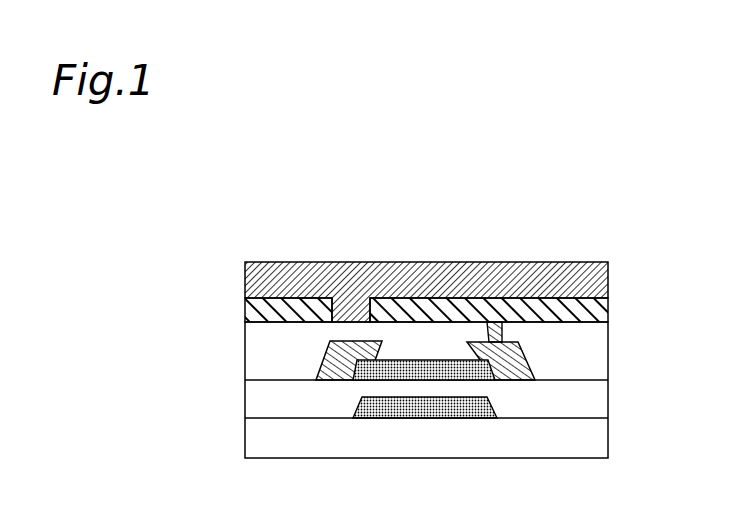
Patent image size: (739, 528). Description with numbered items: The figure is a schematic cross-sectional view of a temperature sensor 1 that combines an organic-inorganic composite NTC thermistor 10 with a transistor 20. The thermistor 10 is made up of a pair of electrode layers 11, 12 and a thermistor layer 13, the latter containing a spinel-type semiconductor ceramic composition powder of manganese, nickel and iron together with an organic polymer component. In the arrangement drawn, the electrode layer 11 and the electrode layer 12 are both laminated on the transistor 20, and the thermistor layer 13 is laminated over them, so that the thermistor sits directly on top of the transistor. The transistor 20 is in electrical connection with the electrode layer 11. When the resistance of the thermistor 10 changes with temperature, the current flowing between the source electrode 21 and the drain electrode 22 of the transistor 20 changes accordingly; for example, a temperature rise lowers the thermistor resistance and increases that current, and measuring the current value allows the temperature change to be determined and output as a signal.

The temperature sensor 1 is at (617, 177).
The organic-inorganic composite NTC thermistor 10 is at (331, 200).
The electrode layer 11 is at (536, 263).
The electrode layer 12 is at (312, 298).
The thermistor layer 13 is at (463, 294).
The transistor 20 is at (459, 411).
The source electrode 21 is at (345, 362).
The drain electrode 22 is at (508, 372).